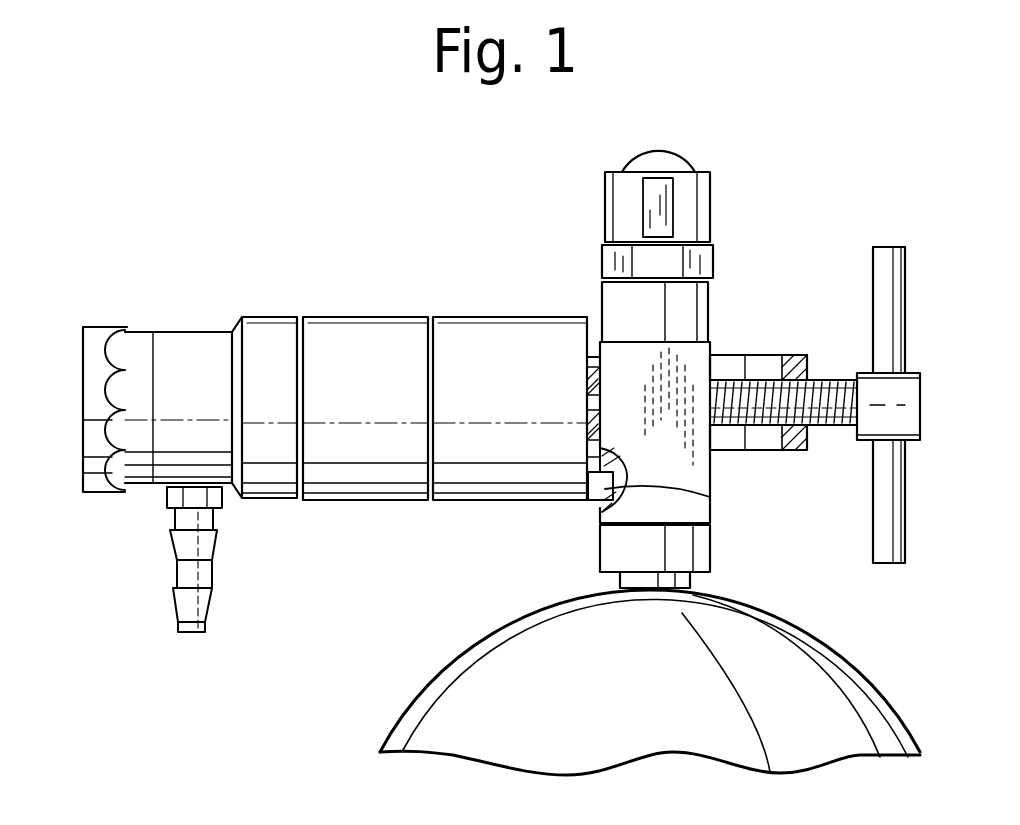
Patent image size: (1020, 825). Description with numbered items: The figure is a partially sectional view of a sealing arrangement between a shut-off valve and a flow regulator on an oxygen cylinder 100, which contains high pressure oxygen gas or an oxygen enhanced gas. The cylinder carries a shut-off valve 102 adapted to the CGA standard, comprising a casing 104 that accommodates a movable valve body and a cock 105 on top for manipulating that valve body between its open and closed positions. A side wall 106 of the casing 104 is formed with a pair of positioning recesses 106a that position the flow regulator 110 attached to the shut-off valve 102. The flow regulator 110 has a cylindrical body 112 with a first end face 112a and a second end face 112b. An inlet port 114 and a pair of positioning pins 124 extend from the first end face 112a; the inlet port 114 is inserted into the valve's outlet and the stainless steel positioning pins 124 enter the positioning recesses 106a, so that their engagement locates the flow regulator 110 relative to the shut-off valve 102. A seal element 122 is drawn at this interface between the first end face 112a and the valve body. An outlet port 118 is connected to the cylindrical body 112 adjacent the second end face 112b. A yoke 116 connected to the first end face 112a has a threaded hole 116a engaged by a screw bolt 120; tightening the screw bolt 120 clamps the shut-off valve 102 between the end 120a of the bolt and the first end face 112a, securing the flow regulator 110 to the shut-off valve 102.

The oxygen cylinder 100 is at (851, 678).
The shut-off valve 102 is at (757, 224).
The casing 104 is at (608, 293).
The cock 105 is at (620, 183).
The side wall 106 is at (587, 467).
The positioning recesses 106a is at (705, 493).
The flow regulator 110 is at (452, 243).
The cylindrical body 112 is at (360, 320).
The first end face 112a is at (593, 357).
The second end face 112b is at (82, 362).
The inlet port 114 is at (587, 405).
The yoke 116 is at (733, 355).
The threaded hole 116a is at (774, 372).
The outlet port 118 is at (215, 575).
The screw bolt 120 is at (835, 427).
The end of screw bolt 120a is at (745, 432).
The upper seal / gasket 122 is at (590, 382).
The positioning pins 124 is at (593, 497).